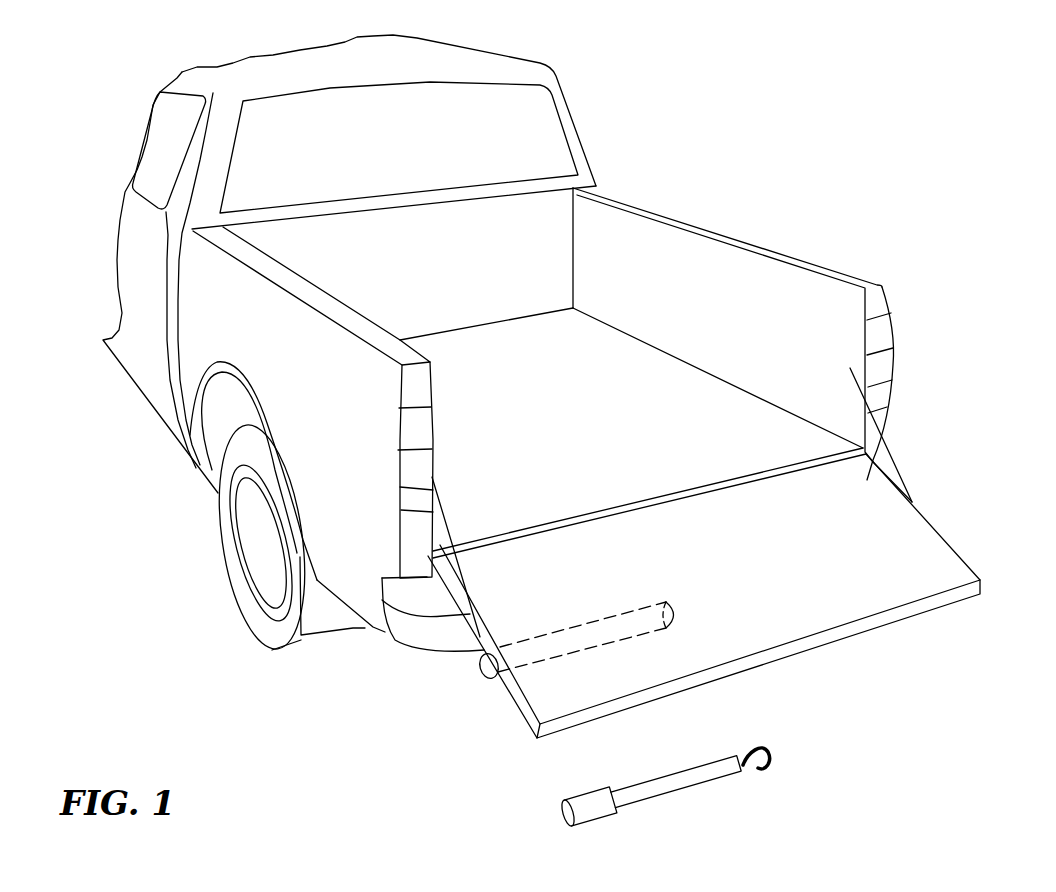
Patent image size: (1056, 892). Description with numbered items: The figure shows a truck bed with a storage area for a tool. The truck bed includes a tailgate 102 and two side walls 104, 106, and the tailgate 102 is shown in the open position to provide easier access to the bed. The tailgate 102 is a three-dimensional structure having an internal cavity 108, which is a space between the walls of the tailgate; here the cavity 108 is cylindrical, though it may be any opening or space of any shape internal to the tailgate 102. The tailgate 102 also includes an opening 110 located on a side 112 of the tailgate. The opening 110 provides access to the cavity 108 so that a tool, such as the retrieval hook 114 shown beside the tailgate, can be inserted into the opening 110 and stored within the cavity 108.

The tailgate 102 is at (938, 527).
The side wall 104 is at (752, 317).
The side wall 106 is at (347, 415).
The internal cavity 108 is at (680, 612).
The opening 110 is at (478, 672).
The side 112 is at (512, 705).
The retrieval hook 114 is at (700, 788).